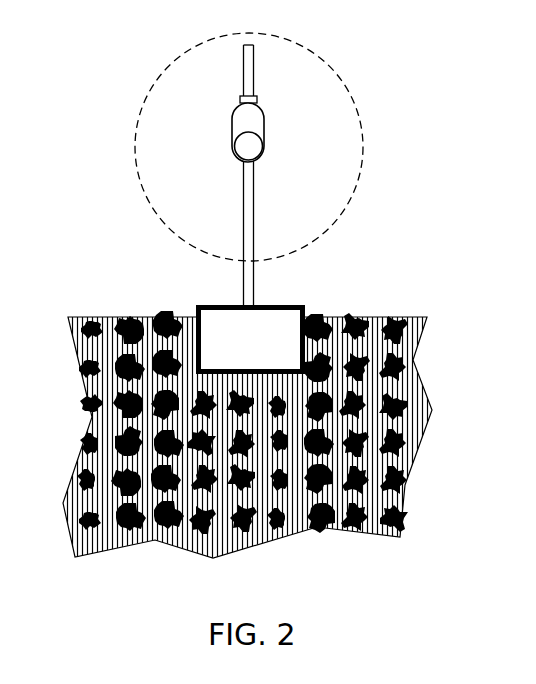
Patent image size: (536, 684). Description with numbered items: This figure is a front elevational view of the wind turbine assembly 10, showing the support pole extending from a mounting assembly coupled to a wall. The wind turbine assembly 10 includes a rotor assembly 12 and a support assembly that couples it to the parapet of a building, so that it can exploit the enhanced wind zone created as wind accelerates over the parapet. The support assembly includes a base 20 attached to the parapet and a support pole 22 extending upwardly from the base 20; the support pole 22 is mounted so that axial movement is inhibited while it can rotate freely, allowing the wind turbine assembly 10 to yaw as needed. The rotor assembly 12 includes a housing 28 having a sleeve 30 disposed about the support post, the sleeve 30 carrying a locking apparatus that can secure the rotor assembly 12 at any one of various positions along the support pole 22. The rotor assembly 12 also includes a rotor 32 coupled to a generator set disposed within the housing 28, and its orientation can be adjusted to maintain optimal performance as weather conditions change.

The wind turbine assembly 10 is at (412, 47).
The rotor assembly 12 is at (112, 138).
The base 20 is at (266, 353).
The support pole 22 is at (244, 282).
The housing 28 is at (253, 128).
The sleeve 30 is at (256, 98).
The rotor 32 is at (340, 180).